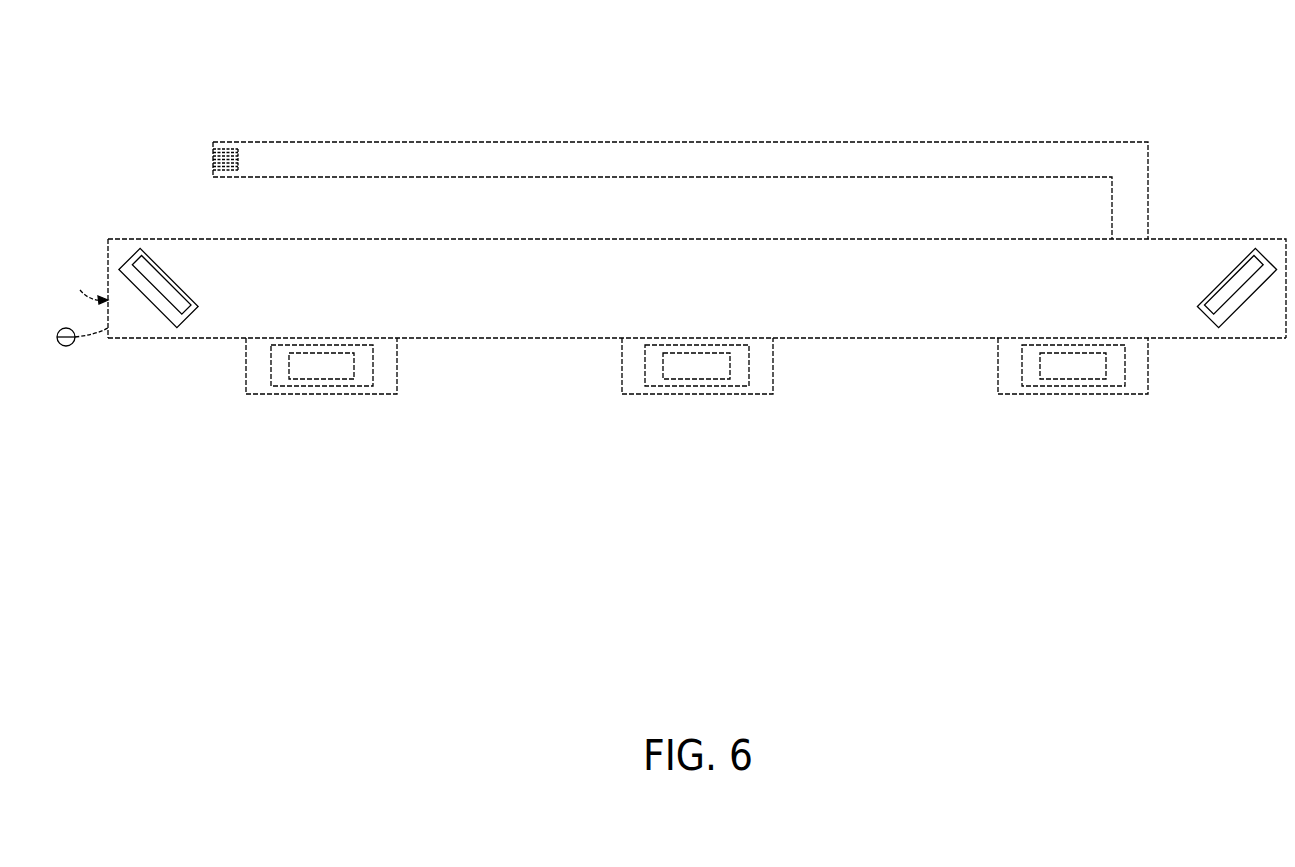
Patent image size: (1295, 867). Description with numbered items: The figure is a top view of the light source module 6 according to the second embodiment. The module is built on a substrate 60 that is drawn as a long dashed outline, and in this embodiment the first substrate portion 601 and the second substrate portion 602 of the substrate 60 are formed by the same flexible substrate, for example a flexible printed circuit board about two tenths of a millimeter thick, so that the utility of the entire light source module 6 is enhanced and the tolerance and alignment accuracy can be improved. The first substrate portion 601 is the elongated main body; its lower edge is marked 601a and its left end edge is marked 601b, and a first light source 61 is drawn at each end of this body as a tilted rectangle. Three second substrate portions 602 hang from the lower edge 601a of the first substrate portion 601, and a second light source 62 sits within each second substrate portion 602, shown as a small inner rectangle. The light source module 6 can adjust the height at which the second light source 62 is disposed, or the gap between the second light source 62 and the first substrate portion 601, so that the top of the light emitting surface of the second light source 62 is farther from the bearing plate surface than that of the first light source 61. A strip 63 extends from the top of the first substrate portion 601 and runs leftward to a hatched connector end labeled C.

The light source module 6 is at (129, 112).
The substrate 60 is at (665, 322).
The first substrate portion 601 is at (135, 327).
The bottom edge of main board portion 601a is at (485, 338).
The side edge of main board portion 601b is at (108, 262).
The second substrate portion 602 is at (260, 362).
The second light source 62 is at (320, 367).
The first light source 61 is at (150, 283).
The connecting cable portion 63 is at (1137, 202).
The connector C is at (214, 158).